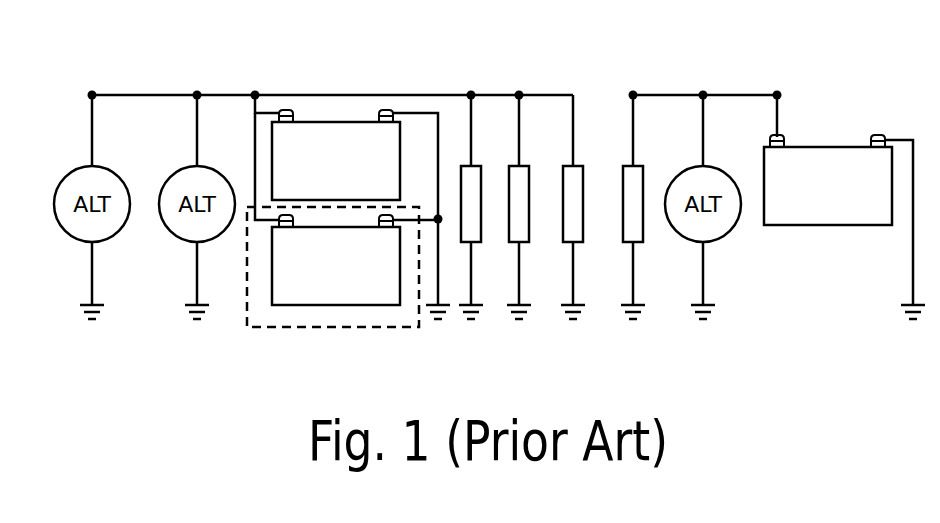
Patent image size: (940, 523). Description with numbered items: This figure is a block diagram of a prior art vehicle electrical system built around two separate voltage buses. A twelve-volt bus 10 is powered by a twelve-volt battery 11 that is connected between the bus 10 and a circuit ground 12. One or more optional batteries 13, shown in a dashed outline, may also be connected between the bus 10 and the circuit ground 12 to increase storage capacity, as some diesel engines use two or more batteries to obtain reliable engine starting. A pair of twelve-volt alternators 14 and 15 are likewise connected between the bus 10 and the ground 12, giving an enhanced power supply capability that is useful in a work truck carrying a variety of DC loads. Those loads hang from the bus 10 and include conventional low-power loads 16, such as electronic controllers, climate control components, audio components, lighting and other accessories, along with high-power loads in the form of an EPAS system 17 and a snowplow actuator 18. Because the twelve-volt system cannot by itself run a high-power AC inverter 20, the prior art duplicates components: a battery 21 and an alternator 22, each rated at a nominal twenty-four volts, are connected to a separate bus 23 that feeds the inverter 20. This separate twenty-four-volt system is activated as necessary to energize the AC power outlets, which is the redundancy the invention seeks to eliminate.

The 12V bus 10 is at (438, 94).
The 12V battery 11 is at (315, 121).
The circuit ground 12 is at (442, 318).
The optional batteries 13 is at (310, 328).
The 12V alternator 14 is at (170, 177).
The 12V alternator 15 is at (63, 176).
The low-power loads 16 is at (478, 165).
The EPAS system 17 is at (527, 165).
The snowplow actuator 18 is at (578, 165).
The high-power AC inverter 20 is at (627, 165).
The battery 21 is at (840, 146).
The alternator 22 is at (719, 238).
The separate bus 23 is at (755, 94).